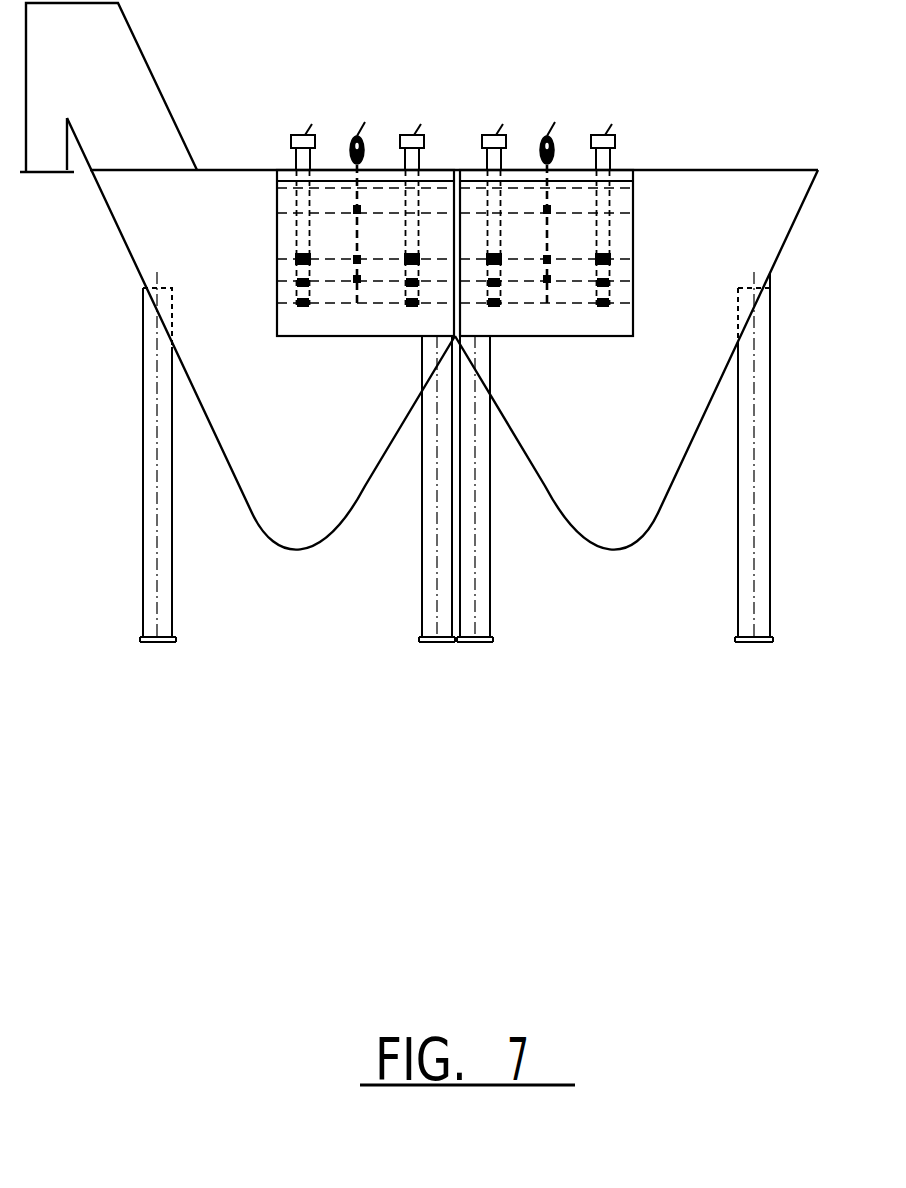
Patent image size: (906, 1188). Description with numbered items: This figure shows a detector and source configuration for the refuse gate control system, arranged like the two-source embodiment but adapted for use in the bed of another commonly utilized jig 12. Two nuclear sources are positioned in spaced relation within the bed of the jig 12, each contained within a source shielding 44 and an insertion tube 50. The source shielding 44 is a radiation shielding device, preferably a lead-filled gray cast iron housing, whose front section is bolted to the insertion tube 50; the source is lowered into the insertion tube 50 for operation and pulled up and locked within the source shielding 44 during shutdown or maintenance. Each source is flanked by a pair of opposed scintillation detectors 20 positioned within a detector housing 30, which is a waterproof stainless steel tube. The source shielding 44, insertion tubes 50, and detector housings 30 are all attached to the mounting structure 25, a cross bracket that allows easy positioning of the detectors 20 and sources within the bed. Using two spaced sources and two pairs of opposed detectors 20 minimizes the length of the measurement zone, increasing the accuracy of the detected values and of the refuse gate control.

The jig 12 is at (762, 168).
The scintillation detectors 20 is at (270, 385).
The mounting structure 25 is at (332, 170).
The detector housing 30 is at (290, 185).
The source shielding 44 is at (357, 135).
The insertion tube 50 is at (360, 280).